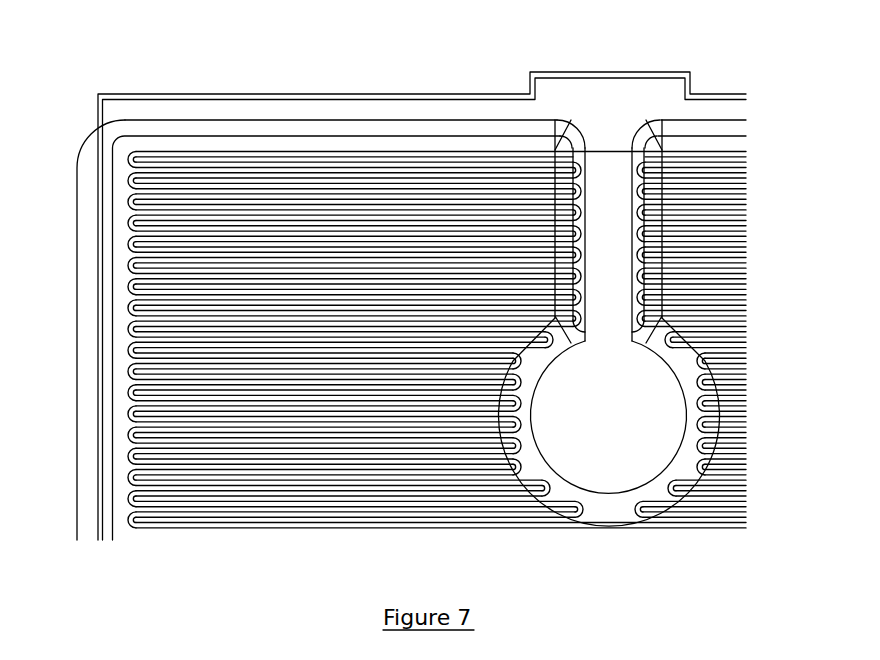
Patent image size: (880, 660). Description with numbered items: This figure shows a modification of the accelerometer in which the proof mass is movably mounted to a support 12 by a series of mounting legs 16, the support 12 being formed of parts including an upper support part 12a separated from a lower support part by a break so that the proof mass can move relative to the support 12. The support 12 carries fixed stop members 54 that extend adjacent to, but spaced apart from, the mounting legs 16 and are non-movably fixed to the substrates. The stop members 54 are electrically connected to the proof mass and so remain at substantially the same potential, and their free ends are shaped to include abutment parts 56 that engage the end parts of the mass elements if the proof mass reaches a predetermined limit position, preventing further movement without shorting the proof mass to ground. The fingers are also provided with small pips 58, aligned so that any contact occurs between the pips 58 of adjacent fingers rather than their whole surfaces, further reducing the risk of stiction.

The support 12 is at (632, 252).
The upper support part 12a is at (600, 178).
The mounting legs 16 is at (383, 140).
The fixed stop members 54 is at (185, 100).
The abutment parts 56 is at (82, 190).
The pips 58 is at (290, 157).